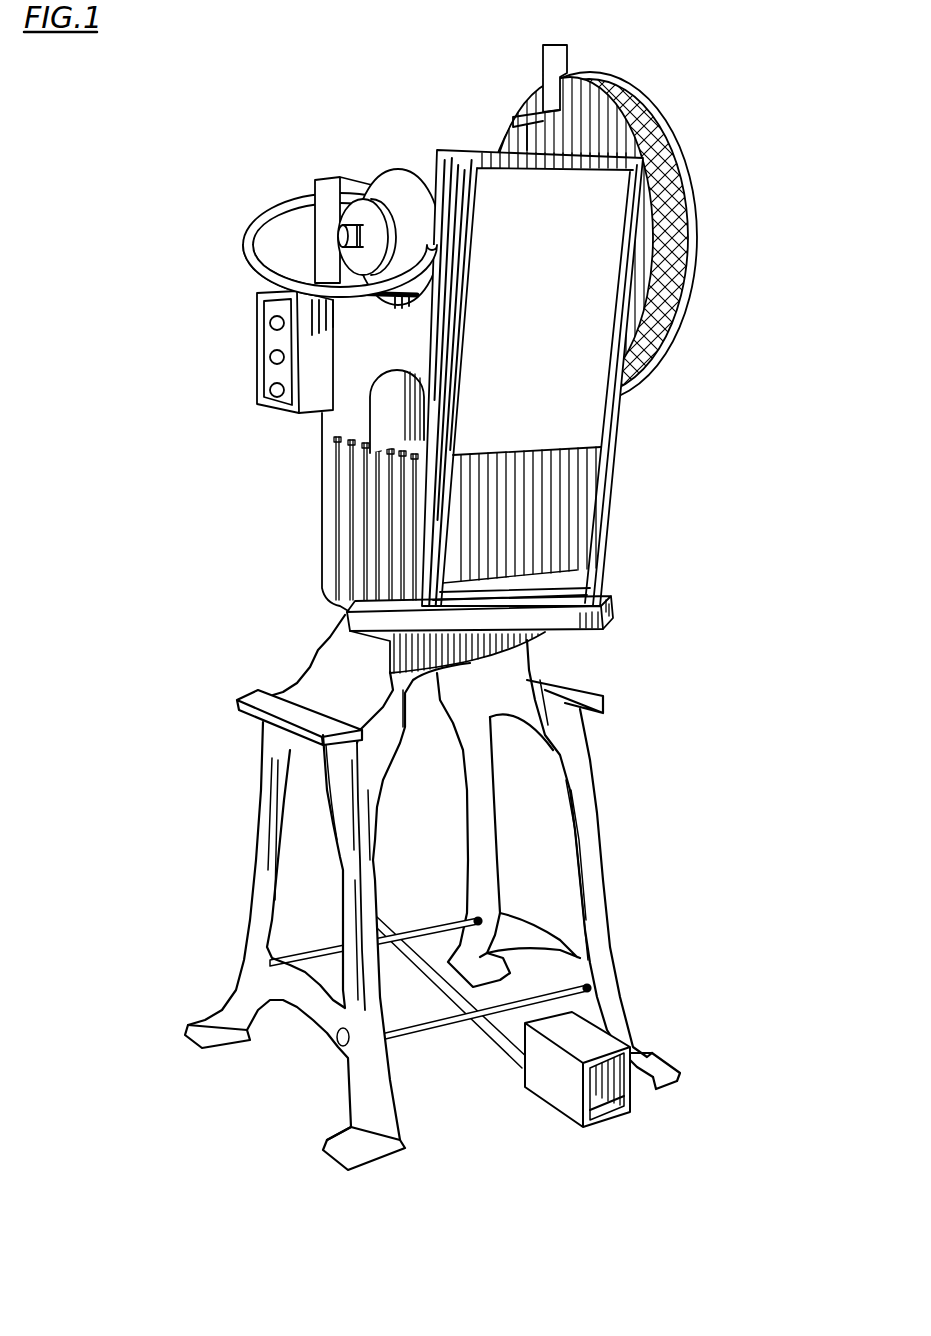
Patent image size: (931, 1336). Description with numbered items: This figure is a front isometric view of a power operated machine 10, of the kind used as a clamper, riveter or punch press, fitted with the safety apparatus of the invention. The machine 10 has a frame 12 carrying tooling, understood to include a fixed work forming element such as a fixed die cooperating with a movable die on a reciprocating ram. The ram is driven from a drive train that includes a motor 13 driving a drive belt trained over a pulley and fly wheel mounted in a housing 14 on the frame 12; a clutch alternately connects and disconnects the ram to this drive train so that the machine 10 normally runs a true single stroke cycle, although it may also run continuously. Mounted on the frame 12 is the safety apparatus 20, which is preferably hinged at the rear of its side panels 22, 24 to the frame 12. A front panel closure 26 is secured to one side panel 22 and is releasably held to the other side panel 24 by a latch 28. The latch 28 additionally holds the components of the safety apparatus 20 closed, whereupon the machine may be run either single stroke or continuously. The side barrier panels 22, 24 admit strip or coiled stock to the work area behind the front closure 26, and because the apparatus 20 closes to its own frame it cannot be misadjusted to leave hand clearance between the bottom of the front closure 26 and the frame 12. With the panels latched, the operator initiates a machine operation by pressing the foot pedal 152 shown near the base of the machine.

The power operated machine 10 is at (640, 400).
The frame 12 is at (553, 627).
The motor 13 is at (400, 170).
The housing 14 is at (615, 223).
The safety apparatus 20 is at (544, 378).
The side panel 22 is at (370, 484).
The side panel 24 is at (565, 540).
The front panel closure 26 is at (572, 317).
The latch 28 is at (648, 378).
The foot pedal 152 is at (608, 1102).